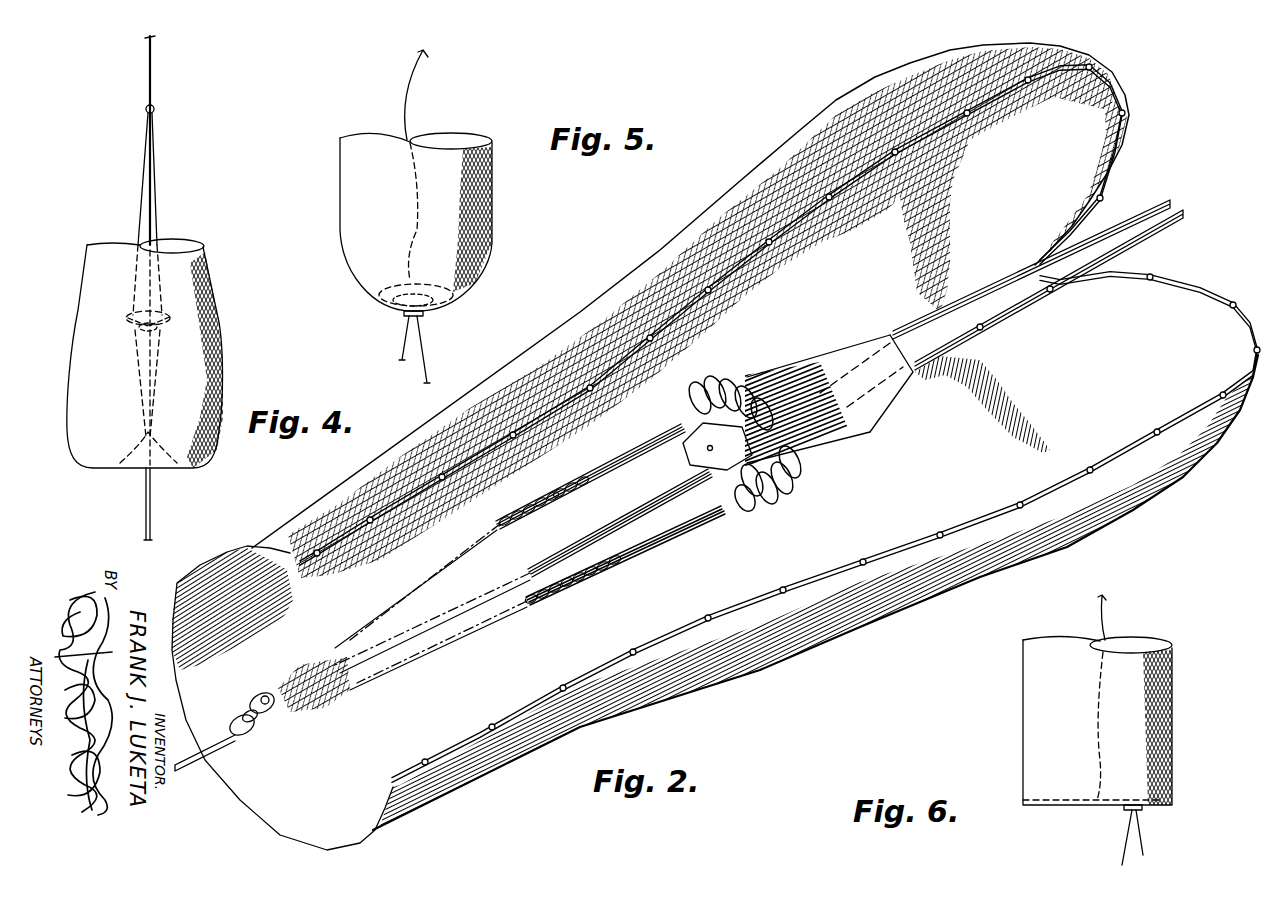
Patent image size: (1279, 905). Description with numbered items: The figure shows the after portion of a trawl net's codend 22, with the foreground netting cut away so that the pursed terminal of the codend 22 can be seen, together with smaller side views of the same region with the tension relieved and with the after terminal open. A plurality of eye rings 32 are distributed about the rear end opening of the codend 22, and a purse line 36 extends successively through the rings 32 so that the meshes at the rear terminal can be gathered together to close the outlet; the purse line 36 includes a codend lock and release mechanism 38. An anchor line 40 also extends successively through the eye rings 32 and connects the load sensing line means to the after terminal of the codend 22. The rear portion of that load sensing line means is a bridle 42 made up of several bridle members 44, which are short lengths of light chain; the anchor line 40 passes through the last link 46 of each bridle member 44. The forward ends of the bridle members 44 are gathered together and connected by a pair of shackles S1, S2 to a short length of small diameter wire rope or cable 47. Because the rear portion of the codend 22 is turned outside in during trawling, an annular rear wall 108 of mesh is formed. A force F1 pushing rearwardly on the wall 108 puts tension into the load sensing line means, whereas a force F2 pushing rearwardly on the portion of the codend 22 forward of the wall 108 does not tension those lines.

In FIG. 2, the codend 22 is at (827, 595).
In FIG. 4, the codend 22 is at (190, 392).
In FIG. 5, the codend 22 is at (460, 215).
In FIG. 6, the codend 22 is at (1040, 715).
In FIG. 2, the eye rings 32 is at (782, 500).
In FIG. 2, the purse line 36 is at (1160, 222).
In FIG. 4, the purse line 36 is at (145, 496).
In FIG. 5, the purse line 36 is at (403, 335).
In FIG. 2, the codend lock and release mechanism 38 is at (683, 440).
In FIG. 4, the codend lock and release mechanism 38 is at (172, 318).
In FIG. 6, the codend lock and release mechanism 38 is at (1118, 812).
In FIG. 2, the anchor line 40 is at (655, 478).
In FIG. 2, the bridle 42 is at (517, 623).
In FIG. 4, the bridle 42 is at (137, 198).
In FIG. 5, the bridle 42 is at (385, 279).
In FIG. 2, the bridle members 44 is at (545, 507).
In FIG. 4, the bridle members 44 is at (156, 190).
In FIG. 5, the bridle members 44 is at (455, 292).
In FIG. 2, the last link 46 is at (572, 482).
In FIG. 2, the wire rope or cable 47 is at (178, 773).
In FIG. 4, the wire rope or cable 47 is at (155, 80).
In FIG. 5, the wire rope or cable 47 is at (415, 86).
In FIG. 6, the wire rope or cable 47 is at (1105, 608).
In FIG. 2, the annular rear wall 108 is at (1103, 150).
In FIG. 2, the shackle S1 is at (262, 695).
In FIG. 2, the shackle S2 is at (235, 722).
In FIG. 2, the force pushing rearwardly on the rear wall F1 is at (1222, 331).
In FIG. 2, the force pushing rearwardly forward of the rear wall F2 is at (505, 712).